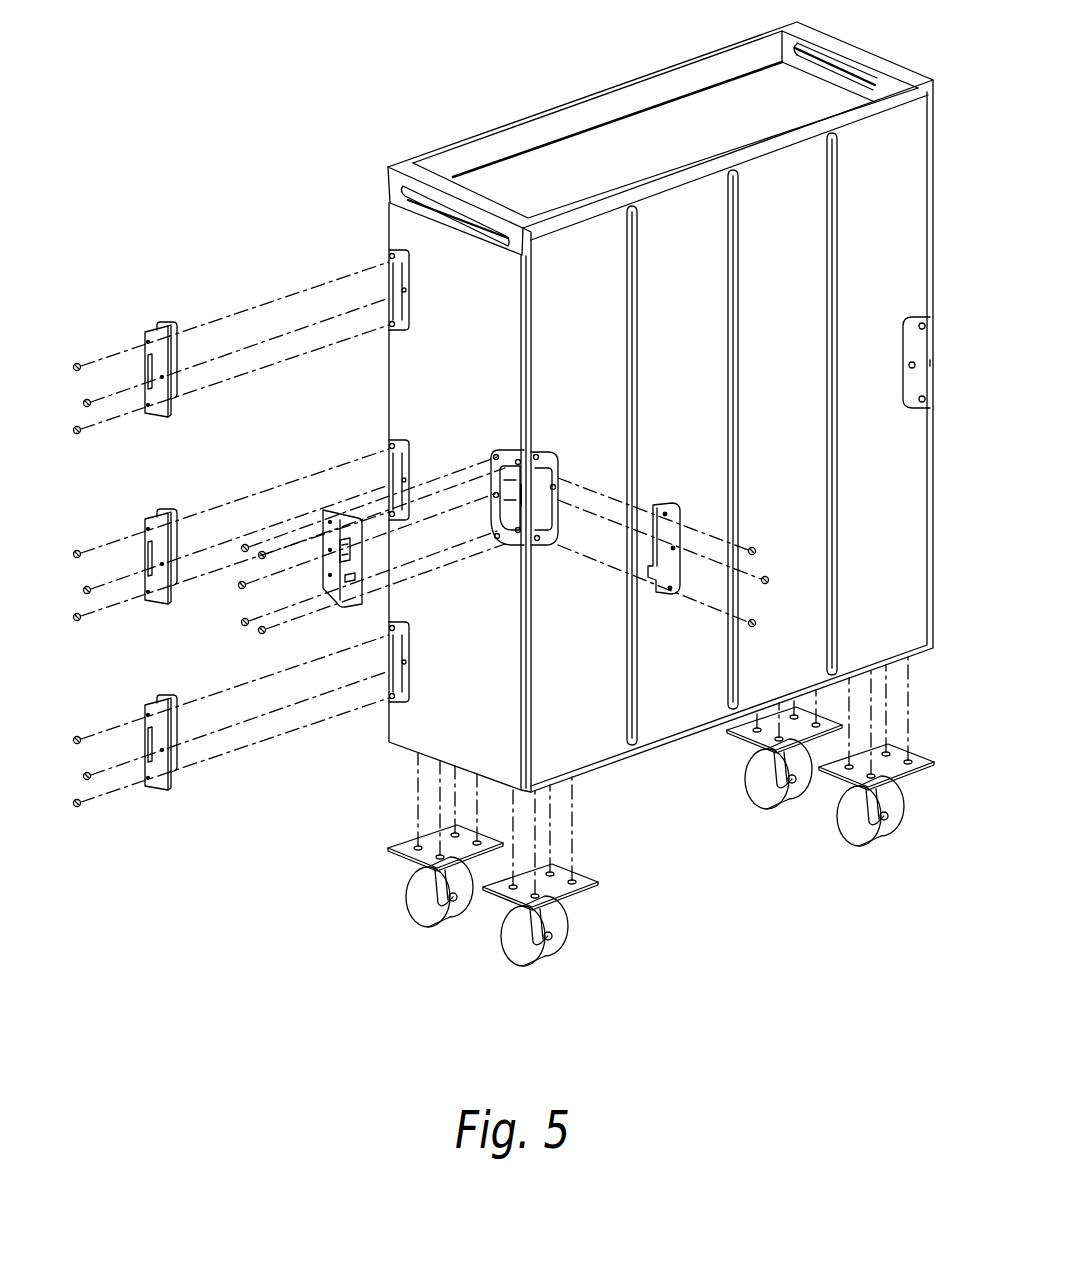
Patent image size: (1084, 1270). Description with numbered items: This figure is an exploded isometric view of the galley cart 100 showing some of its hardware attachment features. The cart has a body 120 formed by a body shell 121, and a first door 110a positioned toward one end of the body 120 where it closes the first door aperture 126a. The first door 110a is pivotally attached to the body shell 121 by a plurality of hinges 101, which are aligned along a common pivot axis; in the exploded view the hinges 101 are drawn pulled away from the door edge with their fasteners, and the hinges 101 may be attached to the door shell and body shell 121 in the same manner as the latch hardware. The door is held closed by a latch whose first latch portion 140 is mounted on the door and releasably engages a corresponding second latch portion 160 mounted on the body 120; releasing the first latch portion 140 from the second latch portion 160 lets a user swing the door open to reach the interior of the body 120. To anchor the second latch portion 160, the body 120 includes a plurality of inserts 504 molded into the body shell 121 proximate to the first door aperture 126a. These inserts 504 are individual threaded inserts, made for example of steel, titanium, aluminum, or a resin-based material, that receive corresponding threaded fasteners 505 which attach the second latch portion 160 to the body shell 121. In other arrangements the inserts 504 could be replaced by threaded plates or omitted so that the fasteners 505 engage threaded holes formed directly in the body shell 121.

The galley cart 100 is at (375, 36).
The body 120 is at (540, 110).
The first door 110a is at (405, 222).
The first door aperture 126a is at (533, 284).
The hinges 101 is at (147, 344).
The inserts 504 is at (541, 453).
The second latch portion 160 is at (673, 578).
The threaded fasteners 505 is at (755, 554).
The first latch portion 140 is at (328, 597).
The body shell 121 is at (660, 716).